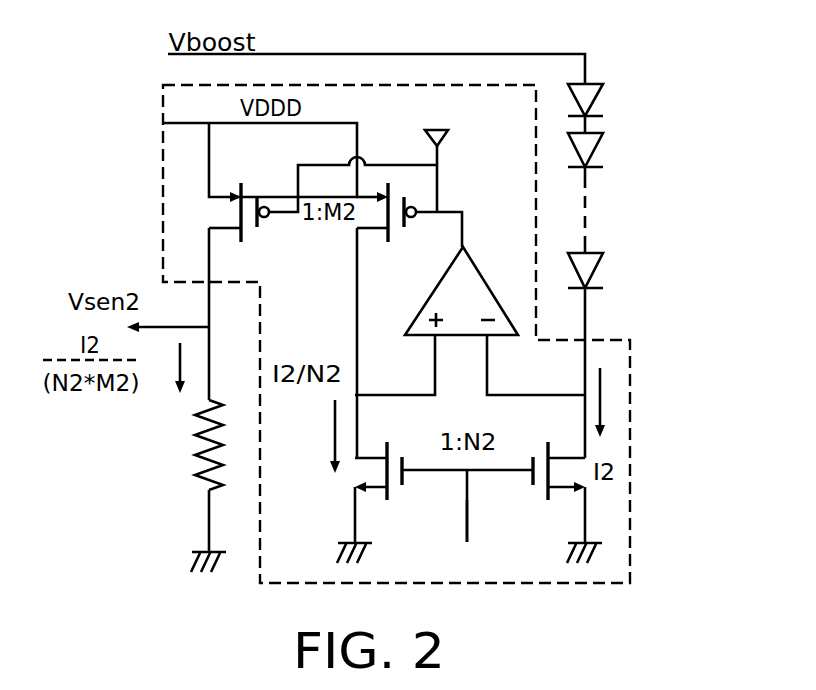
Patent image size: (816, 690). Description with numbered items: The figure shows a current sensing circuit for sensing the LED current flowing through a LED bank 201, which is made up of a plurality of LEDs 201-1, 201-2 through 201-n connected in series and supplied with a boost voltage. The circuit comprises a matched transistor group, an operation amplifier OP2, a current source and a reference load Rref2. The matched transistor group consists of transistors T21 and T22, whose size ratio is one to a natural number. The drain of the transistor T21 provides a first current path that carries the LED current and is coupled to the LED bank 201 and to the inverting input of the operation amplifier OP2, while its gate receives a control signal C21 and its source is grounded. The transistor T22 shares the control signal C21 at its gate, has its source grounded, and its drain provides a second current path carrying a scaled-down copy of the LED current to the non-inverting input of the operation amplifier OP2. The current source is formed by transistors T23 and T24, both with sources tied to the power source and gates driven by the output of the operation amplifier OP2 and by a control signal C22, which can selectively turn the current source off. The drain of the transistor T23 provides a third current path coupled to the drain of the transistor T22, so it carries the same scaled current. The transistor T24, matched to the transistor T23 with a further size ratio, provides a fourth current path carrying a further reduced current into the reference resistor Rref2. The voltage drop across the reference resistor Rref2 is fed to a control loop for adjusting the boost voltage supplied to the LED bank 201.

The LED bank 201 is at (697, 88).
The LED 201-1 is at (627, 100).
The LED 201-2 is at (627, 150).
The LED 201-n is at (627, 270).
The transistor T21 is at (553, 453).
The transistor T22 is at (385, 455).
The transistor T23 is at (389, 228).
The transistor T24 is at (241, 197).
The control signal C21 is at (465, 536).
The control signal C22 is at (432, 154).
The operation amplifier OP2 is at (488, 277).
The reference resistor Rref2 is at (169, 445).